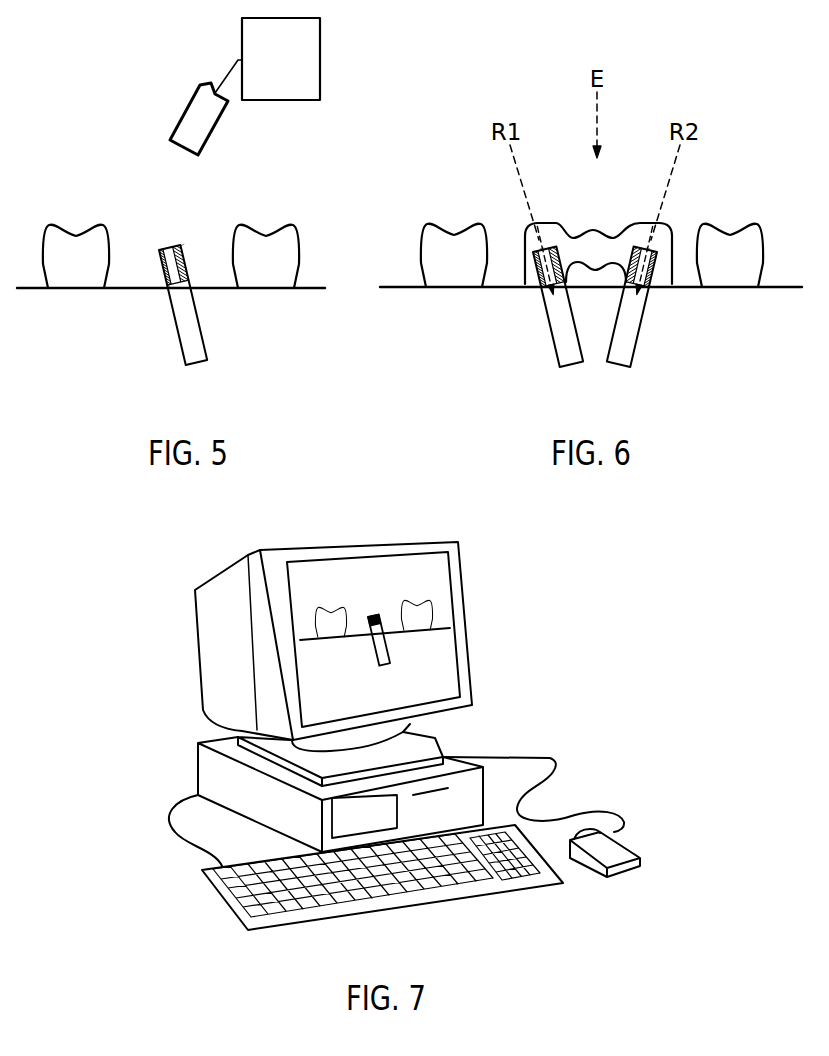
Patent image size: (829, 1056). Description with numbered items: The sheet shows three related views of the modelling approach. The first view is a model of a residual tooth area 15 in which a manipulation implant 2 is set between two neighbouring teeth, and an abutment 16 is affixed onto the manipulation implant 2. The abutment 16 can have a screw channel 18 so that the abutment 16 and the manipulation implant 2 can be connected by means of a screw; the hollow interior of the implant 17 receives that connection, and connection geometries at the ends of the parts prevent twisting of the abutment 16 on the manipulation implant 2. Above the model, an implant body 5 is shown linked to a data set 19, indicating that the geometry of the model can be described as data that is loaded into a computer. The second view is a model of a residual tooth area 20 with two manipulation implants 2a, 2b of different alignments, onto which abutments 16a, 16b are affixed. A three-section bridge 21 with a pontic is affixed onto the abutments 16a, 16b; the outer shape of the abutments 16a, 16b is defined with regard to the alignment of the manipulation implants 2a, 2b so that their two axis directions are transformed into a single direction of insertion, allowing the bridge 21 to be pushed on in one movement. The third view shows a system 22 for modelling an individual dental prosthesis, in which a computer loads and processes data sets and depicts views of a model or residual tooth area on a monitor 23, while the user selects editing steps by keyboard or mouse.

In FIG. 5, the manipulation implant 2 is at (202, 336).
In FIG. 6, the manipulation implant 2a is at (555, 358).
In FIG. 6, the manipulation implant 2b is at (633, 358).
In FIG. 5, the scan template / implant model 5 is at (187, 118).
In FIG. 5, the model of a residual tooth area 15 is at (353, 233).
In FIG. 5, the abutment 16 is at (188, 246).
In FIG. 6, the abutment 16a is at (547, 246).
In FIG. 6, the abutment 16b is at (645, 246).
In FIG. 5, the hollow / bore 17 is at (170, 290).
In FIG. 5, the screw channel 18 is at (162, 250).
In FIG. 5, the data set 19 is at (300, 101).
In FIG. 6, the model of a residual tooth area 20 is at (789, 236).
In FIG. 6, the three-section bridge 21 is at (630, 232).
In FIG. 7, the system for modelling an individual dental prosthesis 22 is at (404, 736).
In FIG. 7, the monitor 23 is at (463, 591).